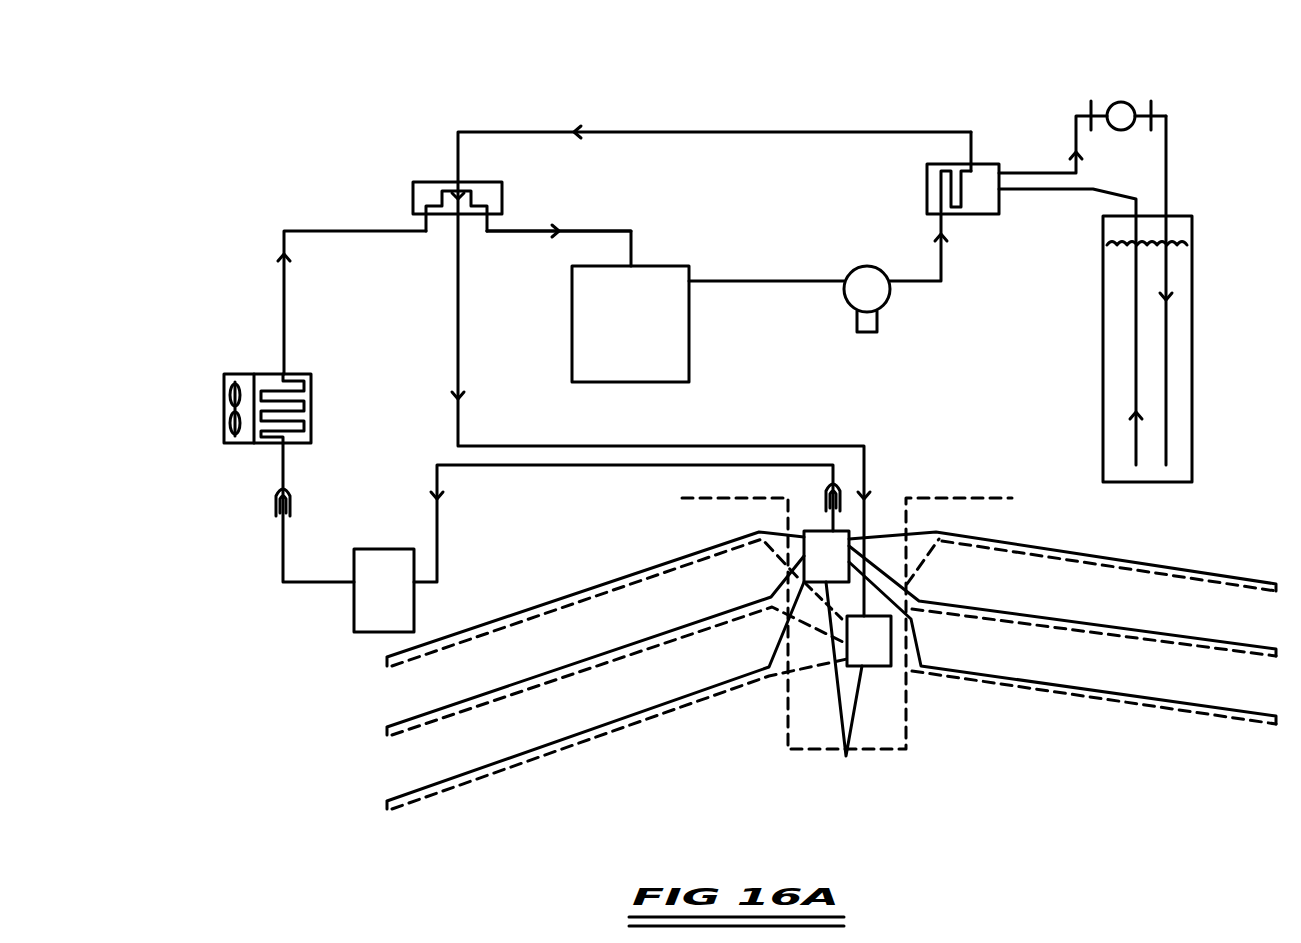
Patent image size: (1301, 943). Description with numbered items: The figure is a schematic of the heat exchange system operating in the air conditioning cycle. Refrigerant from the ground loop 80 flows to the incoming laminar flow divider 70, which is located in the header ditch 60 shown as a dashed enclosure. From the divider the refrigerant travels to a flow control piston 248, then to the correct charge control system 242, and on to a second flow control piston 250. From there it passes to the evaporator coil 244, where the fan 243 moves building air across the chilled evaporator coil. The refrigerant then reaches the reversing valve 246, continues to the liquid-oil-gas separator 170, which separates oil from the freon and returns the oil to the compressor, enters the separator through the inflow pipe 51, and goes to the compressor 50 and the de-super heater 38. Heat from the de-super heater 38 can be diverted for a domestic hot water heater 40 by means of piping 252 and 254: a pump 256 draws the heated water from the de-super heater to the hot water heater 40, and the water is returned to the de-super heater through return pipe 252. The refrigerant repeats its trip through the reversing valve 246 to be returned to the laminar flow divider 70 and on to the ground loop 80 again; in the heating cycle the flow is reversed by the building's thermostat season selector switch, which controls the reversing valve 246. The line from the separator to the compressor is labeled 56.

The de-super heater 38 is at (982, 217).
The domestic hot water heater 40 is at (1104, 400).
The compressor 50 is at (856, 266).
The inflow pipe 51 is at (590, 229).
The return line 56 is at (729, 284).
The header ditch 60 is at (789, 718).
The laminar flow divider 70 is at (847, 666).
The ground loop 80 is at (662, 740).
The liquid-oil-gas separator 170 is at (661, 264).
The correct charge control system 242 is at (355, 608).
The fan 243 is at (225, 392).
The evaporator coil 244 is at (277, 390).
The reversing valve 246 is at (413, 184).
The flow control piston 248 is at (826, 497).
The flow control piston 250 is at (272, 501).
The return pipe 252 is at (1045, 193).
The piping 254 is at (1040, 175).
The pump 256 is at (1126, 100).